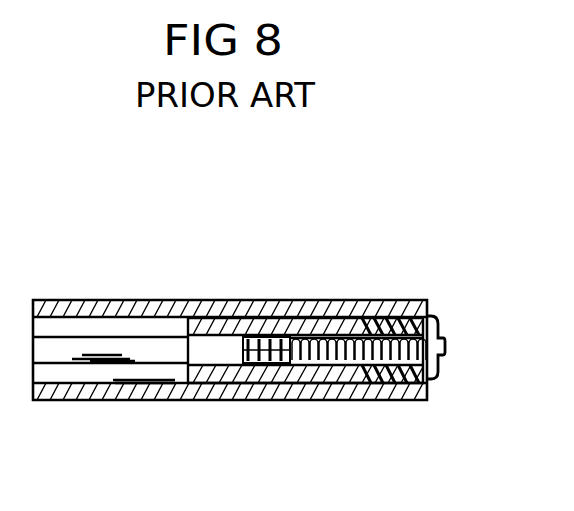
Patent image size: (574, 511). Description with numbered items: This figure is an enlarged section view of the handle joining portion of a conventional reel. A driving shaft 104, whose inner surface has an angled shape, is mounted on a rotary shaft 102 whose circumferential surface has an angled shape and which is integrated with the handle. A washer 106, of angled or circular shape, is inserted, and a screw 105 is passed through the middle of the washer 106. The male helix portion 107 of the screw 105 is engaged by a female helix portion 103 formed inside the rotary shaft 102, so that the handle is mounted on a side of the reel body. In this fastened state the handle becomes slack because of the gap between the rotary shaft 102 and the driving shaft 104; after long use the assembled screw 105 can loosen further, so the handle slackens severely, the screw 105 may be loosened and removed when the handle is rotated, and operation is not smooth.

The rotary shaft 102 is at (85, 364).
The female helix portion 103 is at (263, 366).
The driving shaft 104 is at (304, 301).
The screw 105 is at (440, 323).
The washer 106 is at (396, 301).
The male helix portion 107 is at (398, 401).